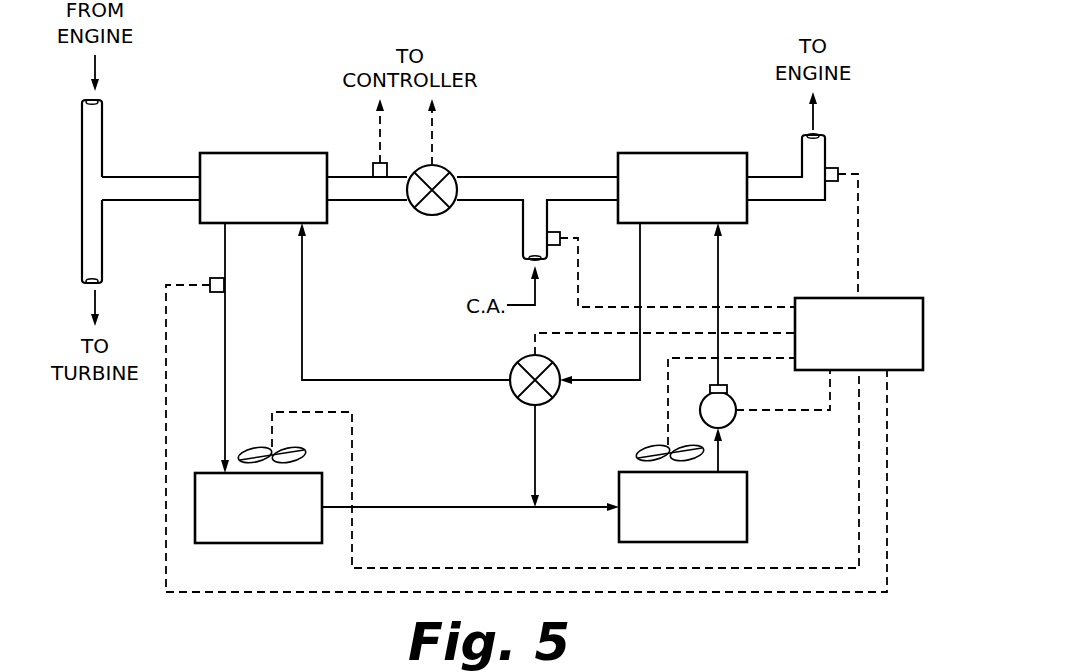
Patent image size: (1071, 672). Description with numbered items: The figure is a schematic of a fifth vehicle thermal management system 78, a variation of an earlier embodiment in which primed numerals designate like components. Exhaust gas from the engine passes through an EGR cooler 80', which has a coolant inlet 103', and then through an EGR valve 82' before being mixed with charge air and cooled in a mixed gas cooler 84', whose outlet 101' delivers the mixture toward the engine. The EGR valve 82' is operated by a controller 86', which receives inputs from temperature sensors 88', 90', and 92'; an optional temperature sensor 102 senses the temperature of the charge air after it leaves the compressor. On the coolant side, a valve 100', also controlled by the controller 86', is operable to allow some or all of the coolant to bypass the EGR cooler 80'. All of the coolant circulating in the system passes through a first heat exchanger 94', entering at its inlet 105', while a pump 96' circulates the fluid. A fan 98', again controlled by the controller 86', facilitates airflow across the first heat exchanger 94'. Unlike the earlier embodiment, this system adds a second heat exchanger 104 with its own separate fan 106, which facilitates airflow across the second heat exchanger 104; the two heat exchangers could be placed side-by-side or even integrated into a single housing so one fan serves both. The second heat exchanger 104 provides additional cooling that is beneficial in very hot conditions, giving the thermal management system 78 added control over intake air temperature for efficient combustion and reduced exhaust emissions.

The vehicle thermal management system 78 is at (672, 42).
The EGR cooler 80' is at (255, 167).
The EGR valve 82' is at (451, 211).
The mixed gas cooler 84' is at (686, 165).
The controller 86' is at (859, 301).
The temperature sensor 88' is at (361, 138).
The temperature sensor 90' is at (525, 415).
The temperature sensor 92' is at (858, 210).
The first heat exchanger 94' is at (722, 507).
The pump 96' is at (765, 410).
The fan 98' is at (695, 410).
The valve 100' is at (623, 384).
The outlet 101' is at (747, 304).
The temperature sensor 102 is at (551, 232).
The inlet 103' is at (404, 301).
The second heat exchanger 104 is at (250, 545).
The inlet 105' is at (470, 489).
The fan 106 is at (250, 448).